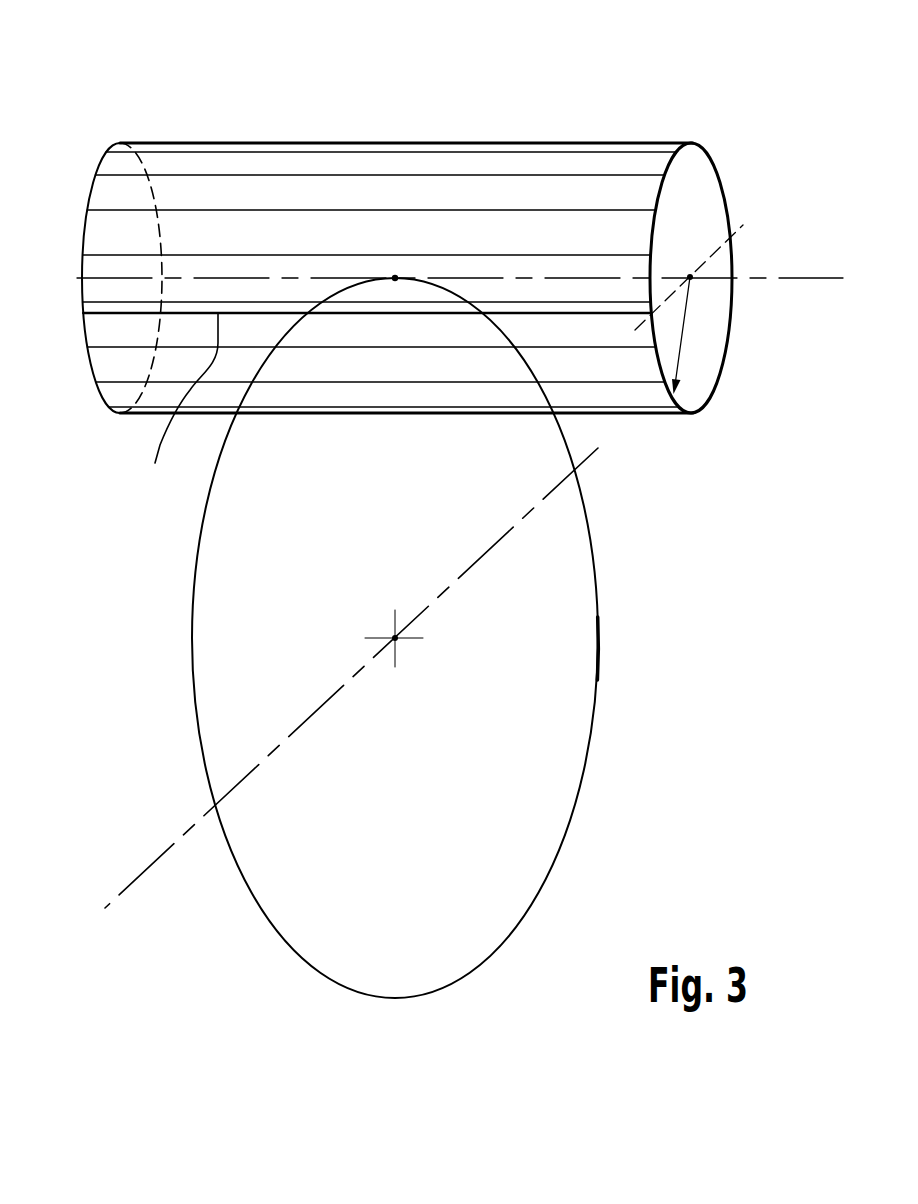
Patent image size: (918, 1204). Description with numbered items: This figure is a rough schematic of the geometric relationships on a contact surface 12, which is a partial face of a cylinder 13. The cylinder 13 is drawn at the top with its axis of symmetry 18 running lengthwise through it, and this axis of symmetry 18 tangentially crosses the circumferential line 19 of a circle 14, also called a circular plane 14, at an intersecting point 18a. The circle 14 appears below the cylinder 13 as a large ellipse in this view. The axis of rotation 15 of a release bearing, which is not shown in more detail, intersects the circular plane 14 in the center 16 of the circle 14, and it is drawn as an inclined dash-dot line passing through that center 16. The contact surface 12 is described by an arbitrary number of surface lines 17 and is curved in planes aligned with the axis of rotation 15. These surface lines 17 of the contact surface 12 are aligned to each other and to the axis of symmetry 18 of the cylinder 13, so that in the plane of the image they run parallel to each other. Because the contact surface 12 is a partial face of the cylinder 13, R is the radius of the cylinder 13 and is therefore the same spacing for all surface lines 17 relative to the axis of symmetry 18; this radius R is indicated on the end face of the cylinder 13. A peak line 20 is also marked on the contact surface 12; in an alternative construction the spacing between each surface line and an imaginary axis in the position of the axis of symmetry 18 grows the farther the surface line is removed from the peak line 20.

The contact surface 12 is at (480, 192).
The cylinder 13 is at (717, 175).
The circle 14 is at (572, 750).
The axis of rotation 15 is at (133, 877).
The center 16 is at (395, 638).
The surface lines 17 is at (587, 210).
The axis of symmetry 18 is at (805, 277).
The intersecting point 18a is at (395, 278).
The circumferential line 19 is at (598, 638).
The peak line 20 is at (180, 408).
The radius of the cylinder R is at (682, 317).